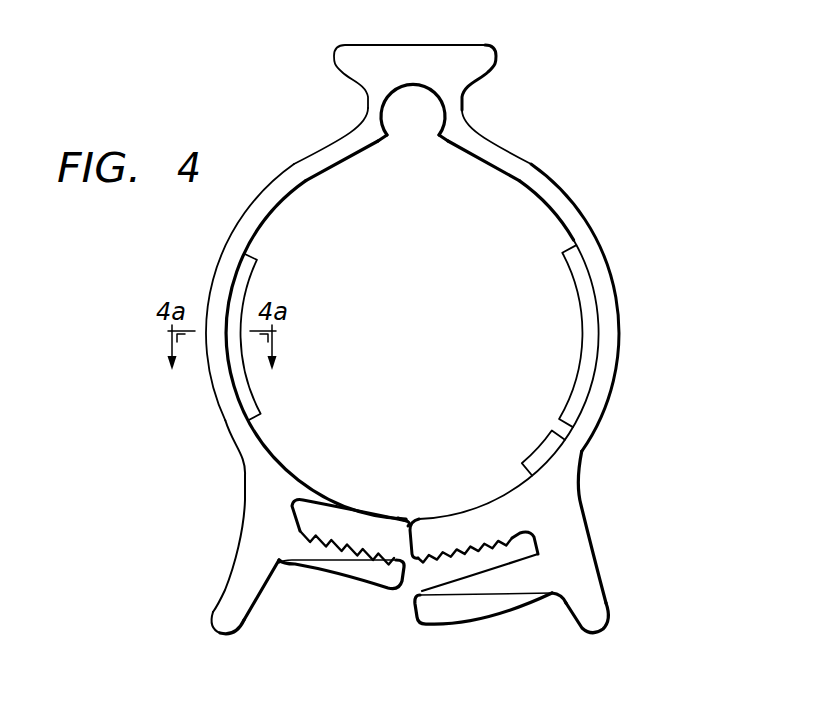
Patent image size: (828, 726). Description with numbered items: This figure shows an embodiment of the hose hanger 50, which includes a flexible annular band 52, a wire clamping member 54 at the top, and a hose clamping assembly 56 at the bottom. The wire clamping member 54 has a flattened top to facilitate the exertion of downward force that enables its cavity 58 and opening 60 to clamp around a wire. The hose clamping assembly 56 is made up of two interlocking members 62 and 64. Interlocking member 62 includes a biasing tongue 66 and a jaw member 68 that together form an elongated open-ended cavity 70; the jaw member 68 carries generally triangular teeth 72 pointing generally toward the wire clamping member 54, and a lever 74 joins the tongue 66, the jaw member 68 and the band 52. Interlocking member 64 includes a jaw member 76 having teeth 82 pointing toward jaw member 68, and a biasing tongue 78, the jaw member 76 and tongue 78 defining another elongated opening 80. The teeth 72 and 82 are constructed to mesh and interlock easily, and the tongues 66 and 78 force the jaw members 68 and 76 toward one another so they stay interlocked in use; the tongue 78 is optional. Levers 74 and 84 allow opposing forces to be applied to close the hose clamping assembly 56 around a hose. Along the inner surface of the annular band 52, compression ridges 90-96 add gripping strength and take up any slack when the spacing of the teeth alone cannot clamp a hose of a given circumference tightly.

The hose hanger 50 is at (656, 152).
The flexible annular band 52 is at (623, 320).
The wire clamping member 54 is at (322, 88).
The hose clamping assembly 56 is at (655, 508).
The cavity 58 is at (425, 103).
The opening 60 is at (416, 155).
The interlocking member 62 is at (195, 568).
The interlocking member 64 is at (638, 568).
The biasing tongue 66 is at (402, 518).
The jaw member 68 is at (358, 590).
The elongated open-ended cavity 70 is at (320, 509).
The teeth 72 is at (337, 538).
The lever 74 is at (216, 628).
The jaw member 76 is at (423, 532).
The biasing tongue 78 is at (416, 624).
The elongated opening 80 is at (515, 536).
The teeth 82 is at (472, 558).
The lever 84 is at (600, 624).
The compression ridges 90-96 is at (258, 400).